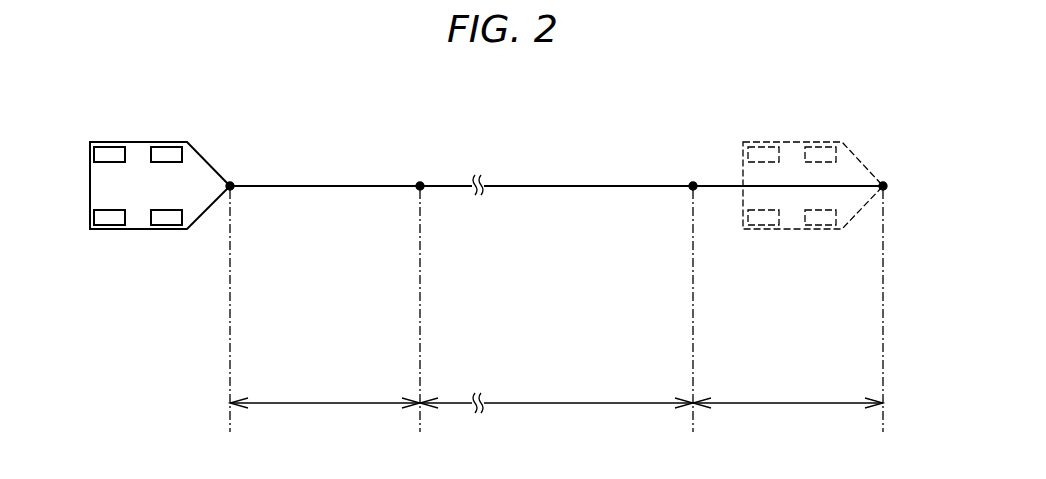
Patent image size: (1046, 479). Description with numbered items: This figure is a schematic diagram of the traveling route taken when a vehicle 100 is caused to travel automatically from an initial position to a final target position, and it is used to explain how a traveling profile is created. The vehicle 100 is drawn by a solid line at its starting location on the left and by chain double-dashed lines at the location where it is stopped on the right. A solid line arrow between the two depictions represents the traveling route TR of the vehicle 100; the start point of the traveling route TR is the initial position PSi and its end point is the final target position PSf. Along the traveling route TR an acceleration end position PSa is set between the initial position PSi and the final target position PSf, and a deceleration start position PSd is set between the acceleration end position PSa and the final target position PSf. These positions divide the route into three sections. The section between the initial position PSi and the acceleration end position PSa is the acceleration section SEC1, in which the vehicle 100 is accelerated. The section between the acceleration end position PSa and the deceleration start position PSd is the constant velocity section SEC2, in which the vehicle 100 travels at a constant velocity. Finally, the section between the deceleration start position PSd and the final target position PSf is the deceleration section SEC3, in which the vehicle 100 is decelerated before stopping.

The vehicle 100 is at (140, 141).
The initial position PSi is at (230, 183).
The acceleration end position PSa is at (420, 183).
The deceleration start position PSd is at (693, 183).
The final target position PSf is at (884, 183).
The traveling route TR is at (572, 183).
The acceleration section SEC1 is at (351, 415).
The constant velocity section SEC2 is at (556, 413).
The deceleration section SEC3 is at (788, 415).